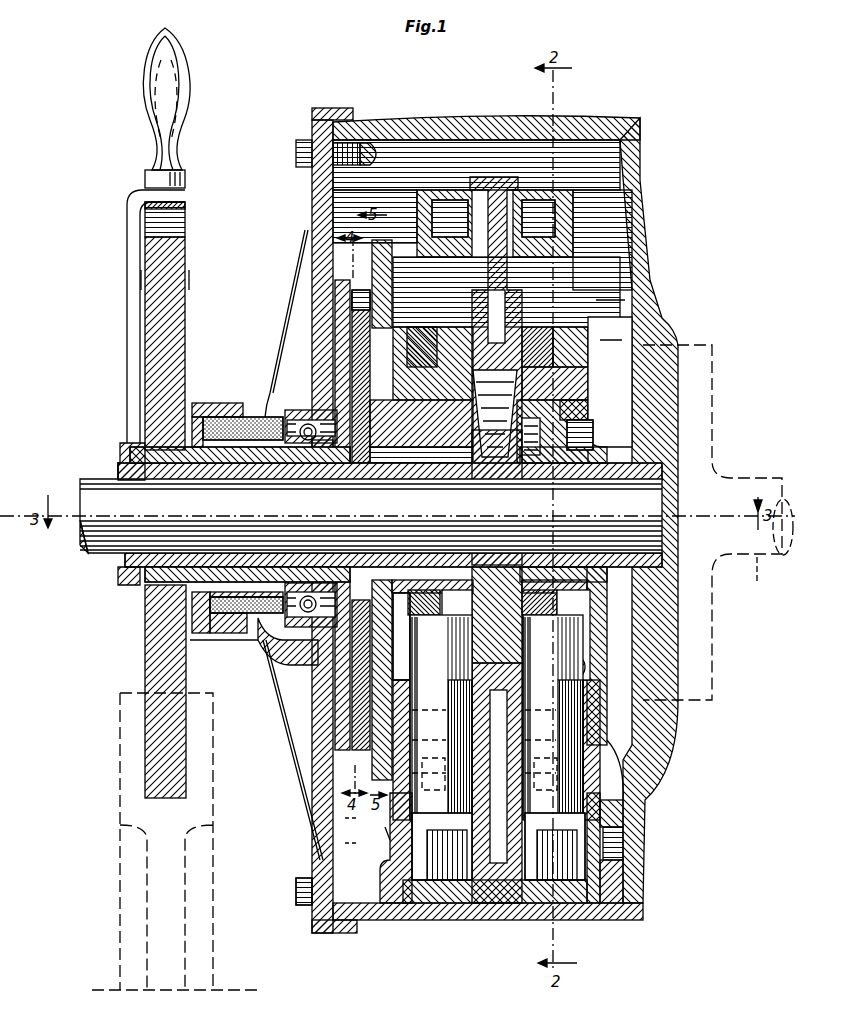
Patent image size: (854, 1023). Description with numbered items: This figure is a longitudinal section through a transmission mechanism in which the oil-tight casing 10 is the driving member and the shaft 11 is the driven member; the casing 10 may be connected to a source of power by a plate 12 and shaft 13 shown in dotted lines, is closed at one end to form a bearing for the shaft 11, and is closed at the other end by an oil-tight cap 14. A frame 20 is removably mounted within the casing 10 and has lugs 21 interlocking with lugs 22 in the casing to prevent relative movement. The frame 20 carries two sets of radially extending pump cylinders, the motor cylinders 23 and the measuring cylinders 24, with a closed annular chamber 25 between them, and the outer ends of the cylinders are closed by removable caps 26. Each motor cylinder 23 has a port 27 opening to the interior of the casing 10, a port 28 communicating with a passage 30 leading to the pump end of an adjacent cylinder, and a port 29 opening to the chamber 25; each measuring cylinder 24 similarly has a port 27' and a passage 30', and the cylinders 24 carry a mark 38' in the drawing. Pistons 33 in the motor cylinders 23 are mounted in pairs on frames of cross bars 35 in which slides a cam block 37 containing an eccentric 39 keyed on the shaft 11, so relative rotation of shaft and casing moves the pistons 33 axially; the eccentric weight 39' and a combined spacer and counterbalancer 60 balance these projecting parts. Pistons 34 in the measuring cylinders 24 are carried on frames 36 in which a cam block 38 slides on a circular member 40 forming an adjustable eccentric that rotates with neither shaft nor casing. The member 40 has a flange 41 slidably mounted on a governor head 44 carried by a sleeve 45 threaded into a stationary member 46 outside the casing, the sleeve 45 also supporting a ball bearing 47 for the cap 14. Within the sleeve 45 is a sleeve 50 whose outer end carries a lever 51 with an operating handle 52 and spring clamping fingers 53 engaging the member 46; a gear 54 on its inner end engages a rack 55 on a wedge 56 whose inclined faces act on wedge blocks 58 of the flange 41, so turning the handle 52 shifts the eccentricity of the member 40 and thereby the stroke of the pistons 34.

The casing 10 is at (633, 114).
The shaft 11 is at (103, 555).
The plate 12 is at (707, 420).
The shaft 13 is at (769, 550).
The oil-tight cap 14 is at (323, 833).
The frame 20 is at (500, 887).
The lugs 21 is at (617, 873).
The lugs 22 is at (613, 845).
The motor cylinders 23 is at (597, 822).
The measuring cylinders 24 is at (402, 908).
The annular chamber 25 is at (502, 180).
The removable caps 26 is at (471, 893).
The port 27 is at (632, 838).
The port 27' is at (362, 830).
The port 28 is at (604, 665).
The port 29 is at (483, 783).
The passage 30 is at (560, 223).
The passage 30' is at (429, 223).
The pistons 33 is at (553, 717).
The pistons 34 is at (441, 717).
The cross bars 35 is at (573, 310).
The frame 36 is at (416, 340).
The cam block 37 is at (573, 380).
The cam block 38 is at (482, 603).
The block 38' is at (379, 844).
The eccentric 39 is at (577, 377).
The eccentric weight 39' is at (647, 770).
The circular member 40 is at (430, 440).
The flange 41 is at (335, 258).
The governor head 44 is at (372, 312).
The sleeve 45 is at (223, 417).
The stationary member 46 is at (175, 320).
The ball bearing 47 is at (272, 643).
The sleeve 50 is at (120, 470).
The lever 51 is at (130, 385).
The operating handle 52 is at (185, 62).
The spring clamping fingers 53 is at (186, 212).
The gear 54 is at (362, 460).
The rack 55 is at (332, 462).
The wedge 56 is at (310, 397).
The wedge blocks 58 is at (337, 348).
The combined spacer and counterbalancer 60 is at (480, 645).